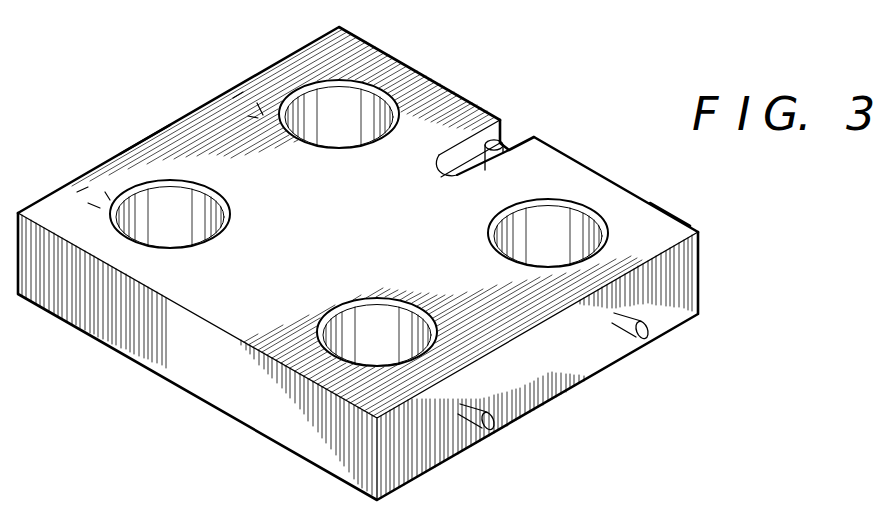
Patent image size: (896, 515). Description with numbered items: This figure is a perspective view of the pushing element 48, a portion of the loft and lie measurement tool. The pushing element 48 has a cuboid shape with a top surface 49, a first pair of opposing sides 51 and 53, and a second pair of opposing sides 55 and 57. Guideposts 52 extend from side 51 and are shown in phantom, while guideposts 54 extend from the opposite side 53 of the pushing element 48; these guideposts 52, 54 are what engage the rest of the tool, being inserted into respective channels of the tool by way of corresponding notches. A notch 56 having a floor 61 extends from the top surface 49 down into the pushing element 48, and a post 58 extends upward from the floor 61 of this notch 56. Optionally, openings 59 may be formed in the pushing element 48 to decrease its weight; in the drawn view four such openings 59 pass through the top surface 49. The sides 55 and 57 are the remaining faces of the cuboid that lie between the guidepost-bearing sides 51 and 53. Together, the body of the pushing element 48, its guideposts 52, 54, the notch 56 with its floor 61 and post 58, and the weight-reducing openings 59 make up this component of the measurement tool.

The pushing element 48 is at (805, 190).
The top surface 49 is at (553, 177).
The side 51 is at (153, 132).
The guideposts 52 is at (238, 100).
The side 53 is at (560, 370).
The guideposts 54 is at (647, 337).
The side 55 is at (675, 217).
The notch 56 is at (470, 147).
The side 57 is at (187, 363).
The post 58 is at (498, 138).
The openings 59 is at (195, 210).
The floor 61 is at (445, 167).